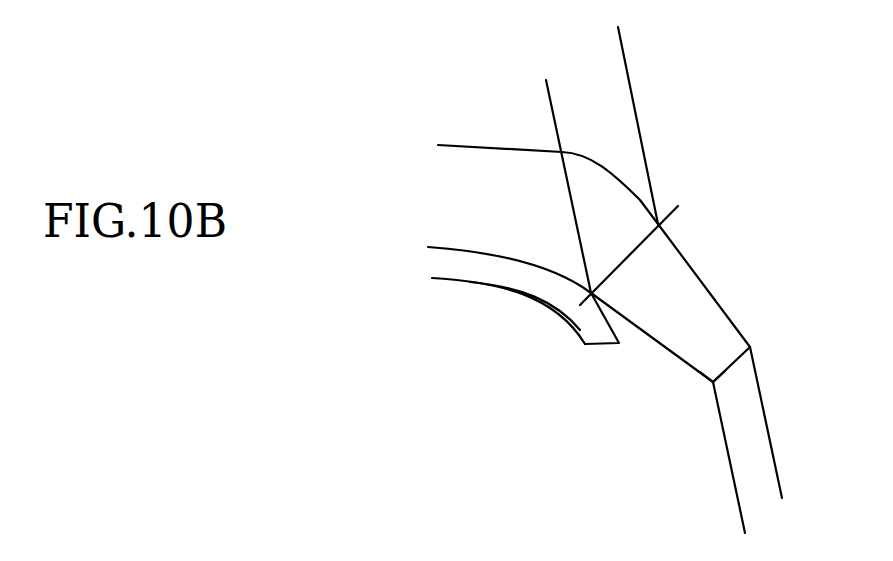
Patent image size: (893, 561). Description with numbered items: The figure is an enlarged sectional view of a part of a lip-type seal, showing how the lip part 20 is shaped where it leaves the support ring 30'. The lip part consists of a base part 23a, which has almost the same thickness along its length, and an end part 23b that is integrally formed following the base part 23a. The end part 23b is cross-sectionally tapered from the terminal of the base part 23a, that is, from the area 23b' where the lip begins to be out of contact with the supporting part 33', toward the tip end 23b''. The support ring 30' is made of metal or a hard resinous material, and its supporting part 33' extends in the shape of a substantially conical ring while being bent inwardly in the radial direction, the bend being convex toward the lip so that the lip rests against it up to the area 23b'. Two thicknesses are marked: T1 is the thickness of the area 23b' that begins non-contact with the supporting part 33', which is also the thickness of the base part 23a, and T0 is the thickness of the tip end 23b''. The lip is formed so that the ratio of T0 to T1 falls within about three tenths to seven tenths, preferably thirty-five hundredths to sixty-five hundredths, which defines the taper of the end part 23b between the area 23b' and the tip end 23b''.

The blade member 20 is at (478, 146).
The base part 23a is at (617, 223).
The end part 23b is at (713, 303).
The area that begins non-contact with the supporting part 23b' is at (606, 327).
The tip end 23b'' is at (681, 429).
The support ring 30' is at (502, 324).
The supporting part 33' is at (525, 348).
The thickness of the area that begins non-contact with the supporting part T1 is at (622, 45).
The thickness of the tip end T0 is at (813, 452).